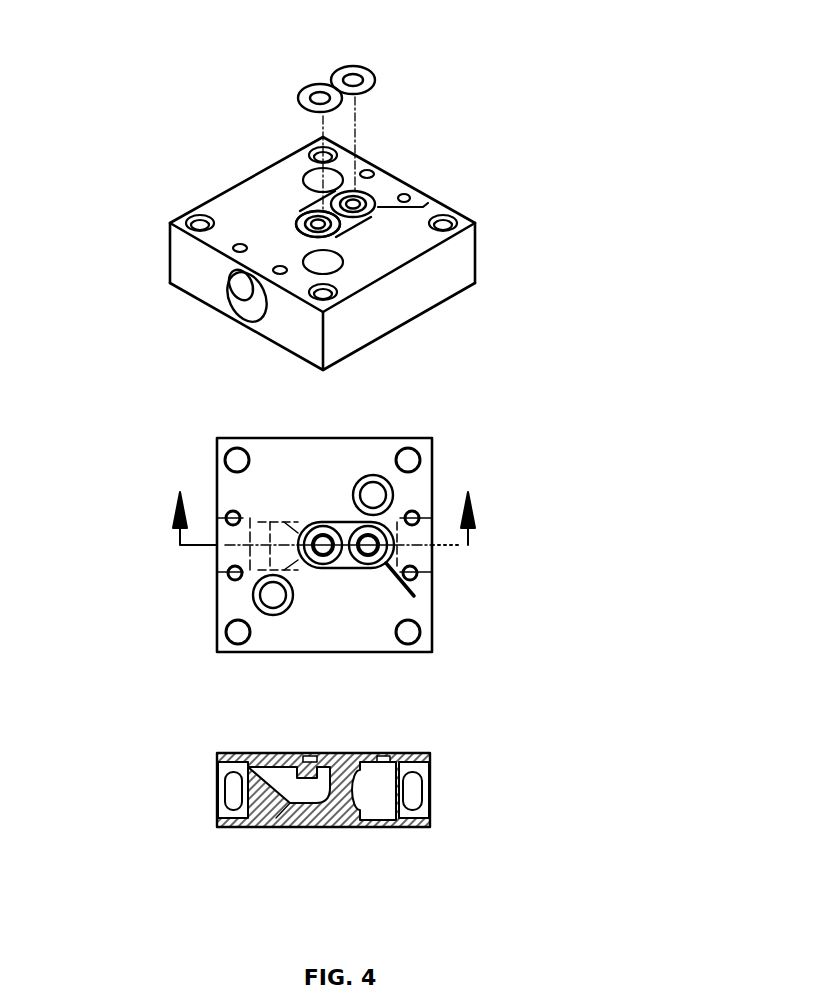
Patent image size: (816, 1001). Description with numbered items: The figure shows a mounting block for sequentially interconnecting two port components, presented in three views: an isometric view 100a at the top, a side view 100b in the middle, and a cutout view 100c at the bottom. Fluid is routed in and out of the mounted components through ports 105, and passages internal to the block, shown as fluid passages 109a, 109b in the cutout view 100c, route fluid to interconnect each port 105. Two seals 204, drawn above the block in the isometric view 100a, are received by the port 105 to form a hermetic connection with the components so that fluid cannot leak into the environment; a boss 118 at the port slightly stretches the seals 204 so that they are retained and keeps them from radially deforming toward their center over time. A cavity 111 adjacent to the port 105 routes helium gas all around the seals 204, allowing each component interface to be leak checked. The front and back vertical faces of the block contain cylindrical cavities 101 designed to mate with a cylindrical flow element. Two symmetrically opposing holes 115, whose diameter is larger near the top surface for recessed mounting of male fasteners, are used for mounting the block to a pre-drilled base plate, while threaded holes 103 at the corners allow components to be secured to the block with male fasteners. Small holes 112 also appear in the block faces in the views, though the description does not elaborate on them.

The isometric view 100a is at (443, 278).
The side view 100b is at (418, 655).
The cutout view 100c is at (378, 827).
The cylindrical cavity 101 is at (247, 300).
The threaded hole 103 is at (453, 217).
The port 105 is at (305, 220).
The fluid passage 109a is at (290, 550).
The fluid passage 109b is at (380, 792).
The cavity 111 is at (423, 206).
The small pin hole 112 is at (234, 247).
The hole 115 is at (332, 263).
The boss 118 is at (318, 218).
The seal 204 is at (362, 106).